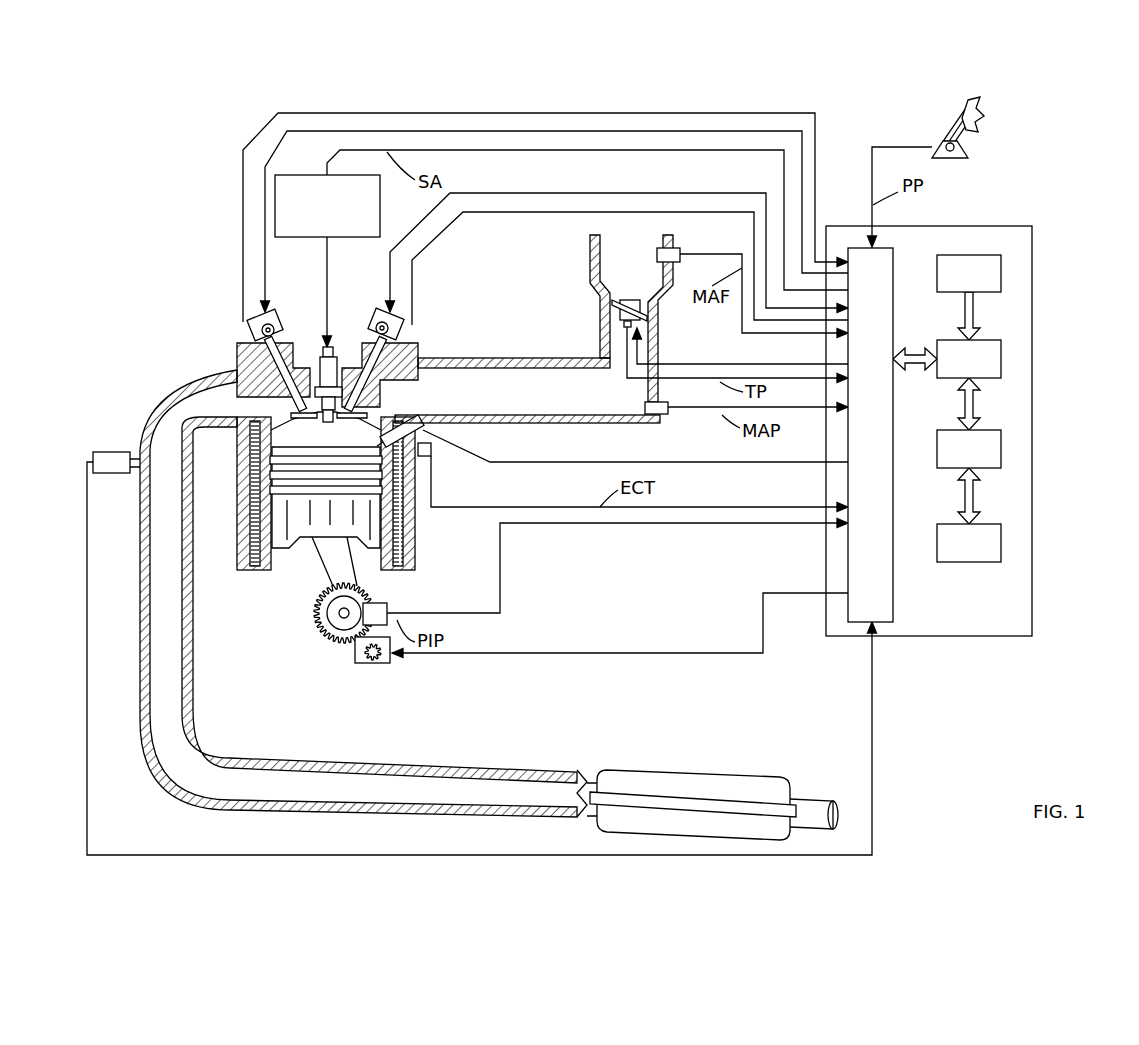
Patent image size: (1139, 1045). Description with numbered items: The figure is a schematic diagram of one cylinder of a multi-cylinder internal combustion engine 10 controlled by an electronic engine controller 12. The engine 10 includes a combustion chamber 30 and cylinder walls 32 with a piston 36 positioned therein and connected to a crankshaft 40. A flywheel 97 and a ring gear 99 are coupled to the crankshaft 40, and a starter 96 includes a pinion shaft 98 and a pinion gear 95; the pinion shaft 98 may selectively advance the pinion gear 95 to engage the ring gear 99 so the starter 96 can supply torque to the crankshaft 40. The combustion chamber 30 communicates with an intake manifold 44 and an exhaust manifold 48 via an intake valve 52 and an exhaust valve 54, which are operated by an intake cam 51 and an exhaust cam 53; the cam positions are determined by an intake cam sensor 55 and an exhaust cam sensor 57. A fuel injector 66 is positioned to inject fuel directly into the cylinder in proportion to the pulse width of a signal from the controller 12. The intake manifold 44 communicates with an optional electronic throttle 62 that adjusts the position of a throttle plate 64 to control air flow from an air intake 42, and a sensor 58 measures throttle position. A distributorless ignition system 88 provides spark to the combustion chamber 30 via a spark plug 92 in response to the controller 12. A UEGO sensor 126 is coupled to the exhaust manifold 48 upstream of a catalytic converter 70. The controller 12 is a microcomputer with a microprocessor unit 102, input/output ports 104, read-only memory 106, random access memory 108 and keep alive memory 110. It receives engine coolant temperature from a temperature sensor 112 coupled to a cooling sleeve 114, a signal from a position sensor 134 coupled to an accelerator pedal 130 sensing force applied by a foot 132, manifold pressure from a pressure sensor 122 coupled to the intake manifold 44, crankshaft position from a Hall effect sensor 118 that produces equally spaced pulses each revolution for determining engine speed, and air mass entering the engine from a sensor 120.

The internal combustion engine 10 is at (176, 300).
The electronic engine controller 12 is at (964, 416).
The combustion chamber 30 is at (255, 521).
The cylinder walls 32 is at (277, 556).
The piston 36 is at (312, 527).
The crankshaft 40 is at (328, 642).
The air intake 42 is at (620, 279).
The intake manifold 44 is at (583, 405).
The exhaust manifold 48 is at (200, 408).
The intake cam 51 is at (375, 314).
The intake valve 52 is at (365, 404).
The exhaust cam 53 is at (272, 314).
The exhaust valve 54 is at (262, 397).
The intake cam sensor 55 is at (403, 337).
The exhaust cam sensor 57 is at (248, 333).
The throttle position sensor 58 is at (613, 326).
The electronic throttle 62 is at (648, 305).
The throttle plate 64 is at (620, 304).
The fuel injector 66 is at (612, 448).
The catalytic converter 70 is at (604, 772).
The distributorless ignition system 88 is at (287, 175).
The spark plug 92 is at (332, 342).
The pinion gear 95 is at (381, 659).
The starter 96 is at (384, 658).
The flywheel 97 is at (322, 612).
The pinion shaft 98 is at (369, 654).
The ring gear 99 is at (341, 648).
The microprocessor unit 102 is at (1002, 358).
The input/output ports 104 is at (895, 253).
The read-only memory 106 is at (1002, 270).
The random access memory 108 is at (1002, 448).
The keep alive memory 110 is at (1002, 541).
The temperature sensor 112 is at (430, 460).
The cooling sleeve 114 is at (400, 525).
The Hall effect sensor 118 is at (387, 603).
The air mass sensor 120 is at (675, 248).
The pressure sensor 122 is at (668, 413).
The Universal Exhaust Gas Oxygen sensor 126 is at (95, 453).
The accelerator pedal 130 is at (982, 130).
The foot 132 is at (982, 112).
The position sensor 134 is at (958, 147).